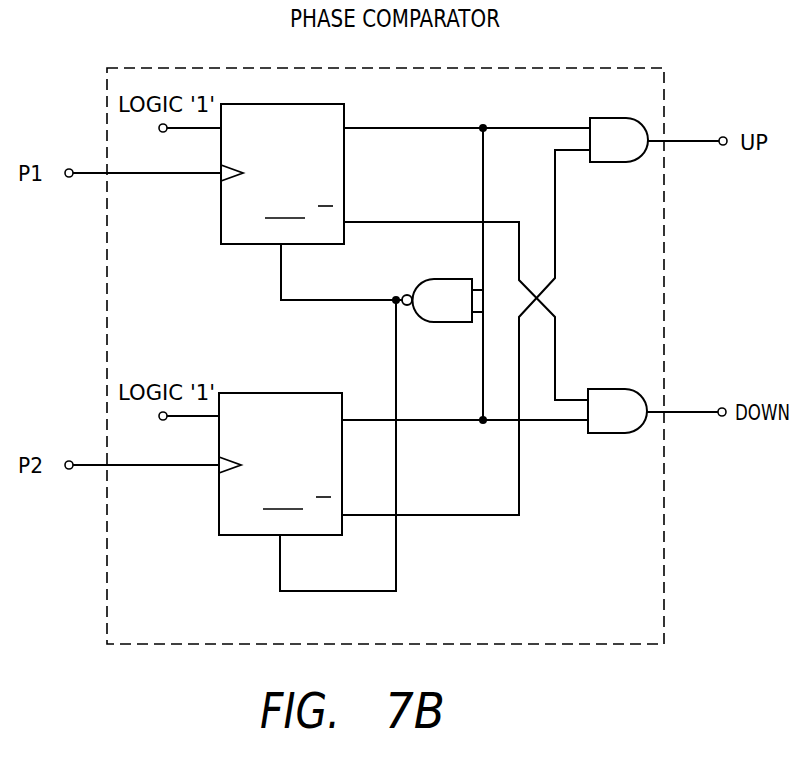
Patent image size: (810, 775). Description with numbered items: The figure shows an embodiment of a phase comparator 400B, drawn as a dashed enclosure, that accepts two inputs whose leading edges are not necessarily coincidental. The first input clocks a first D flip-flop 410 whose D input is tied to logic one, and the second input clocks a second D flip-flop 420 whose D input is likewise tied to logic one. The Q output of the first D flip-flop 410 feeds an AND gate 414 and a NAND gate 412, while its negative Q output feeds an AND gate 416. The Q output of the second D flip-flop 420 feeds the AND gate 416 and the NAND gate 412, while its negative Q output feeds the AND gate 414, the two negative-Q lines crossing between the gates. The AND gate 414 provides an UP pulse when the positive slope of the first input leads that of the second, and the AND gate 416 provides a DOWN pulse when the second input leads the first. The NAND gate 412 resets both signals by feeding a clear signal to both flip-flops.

The phase comparator 400B is at (306, 68).
The first D flip-flop 410 is at (243, 244).
The second D flip-flop 420 is at (241, 535).
The NAND gate 412 is at (444, 310).
The AND gate 414 is at (612, 150).
The AND gate 416 is at (608, 403).